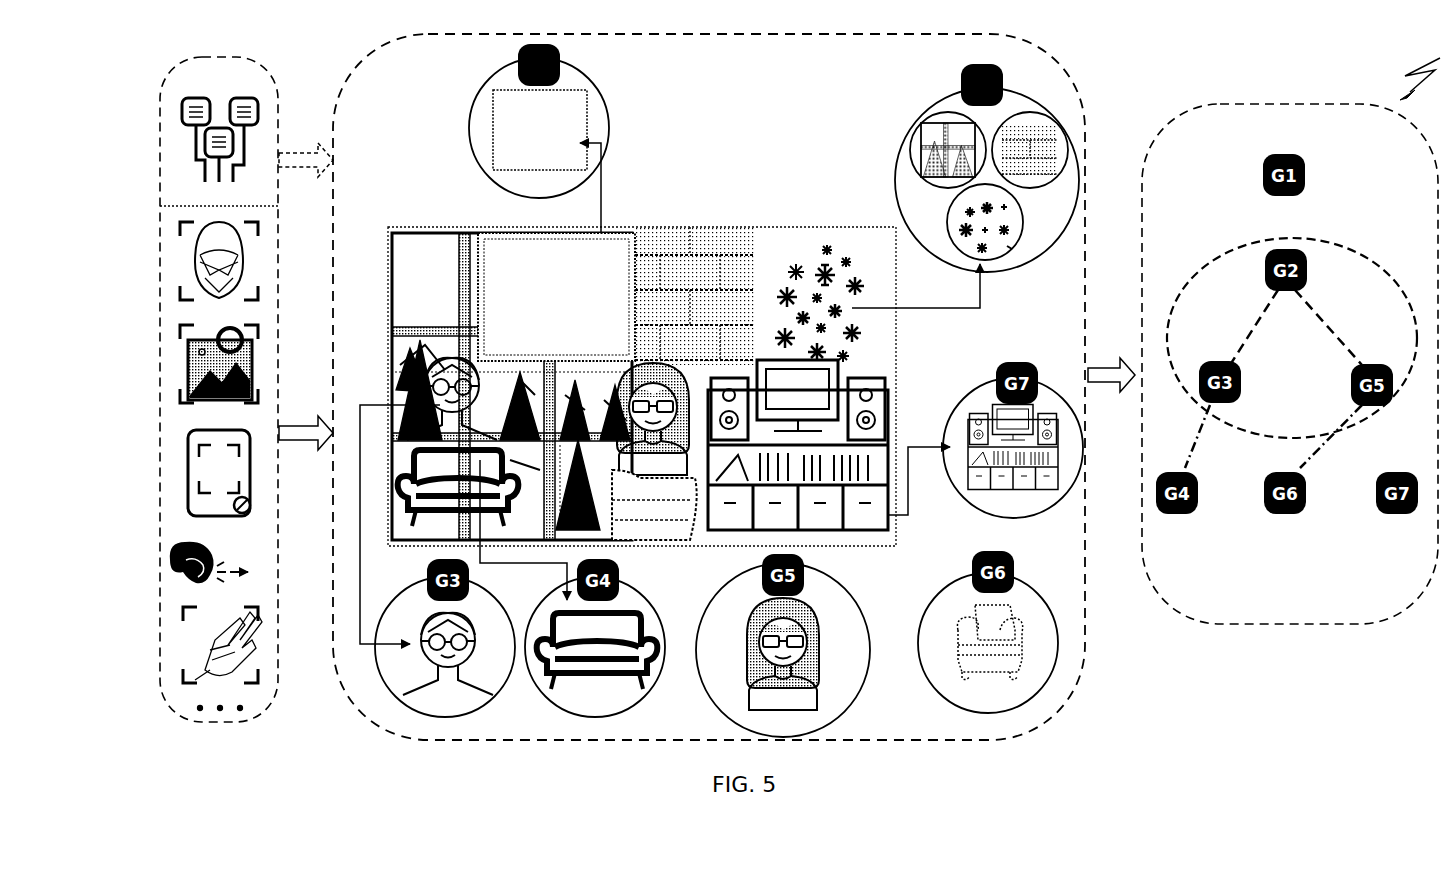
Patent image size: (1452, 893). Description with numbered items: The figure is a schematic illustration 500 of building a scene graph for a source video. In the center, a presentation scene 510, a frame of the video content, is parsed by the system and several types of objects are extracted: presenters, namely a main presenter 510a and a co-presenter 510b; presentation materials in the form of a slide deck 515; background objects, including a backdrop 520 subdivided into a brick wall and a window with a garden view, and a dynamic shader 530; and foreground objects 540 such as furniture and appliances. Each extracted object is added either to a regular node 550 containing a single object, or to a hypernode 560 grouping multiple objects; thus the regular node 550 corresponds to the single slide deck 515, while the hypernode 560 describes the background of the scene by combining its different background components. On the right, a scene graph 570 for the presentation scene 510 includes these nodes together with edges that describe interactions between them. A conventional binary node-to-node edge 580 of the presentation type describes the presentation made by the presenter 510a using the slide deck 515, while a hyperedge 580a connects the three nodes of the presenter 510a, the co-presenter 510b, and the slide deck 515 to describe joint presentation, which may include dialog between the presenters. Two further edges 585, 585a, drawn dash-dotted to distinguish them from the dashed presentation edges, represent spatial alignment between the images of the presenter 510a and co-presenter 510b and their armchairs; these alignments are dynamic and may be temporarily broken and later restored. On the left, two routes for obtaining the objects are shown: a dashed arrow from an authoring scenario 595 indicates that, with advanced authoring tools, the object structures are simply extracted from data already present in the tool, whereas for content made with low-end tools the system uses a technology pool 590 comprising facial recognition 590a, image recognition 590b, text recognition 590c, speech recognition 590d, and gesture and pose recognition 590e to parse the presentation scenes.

The schematic illustration 500 is at (1415, 67).
The presentation scene 510 is at (512, 386).
The main presenter 510a is at (660, 375).
The co-presenter 510b is at (440, 340).
The slide deck 515 is at (556, 297).
The backdrop 520 is at (695, 296).
The dynamic shader 530 is at (827, 298).
The foreground objects 540 is at (892, 390).
The regular node 550 is at (610, 118).
The hypernode 560 is at (920, 110).
The scene graph 570 is at (1203, 103).
The binary edge 580 is at (1315, 313).
The hyperedge 580a is at (1330, 240).
The alignment edge 585 is at (1312, 450).
The alignment edge 585a is at (1200, 445).
The technology pool 590 is at (160, 250).
The facial recognition 590a is at (192, 258).
The image recognition 590b is at (190, 375).
The text recognition 590c is at (200, 462).
The speech recognition 590d is at (182, 583).
The gesture and pose recognition 590e is at (195, 646).
The authoring scenario 595 is at (182, 112).